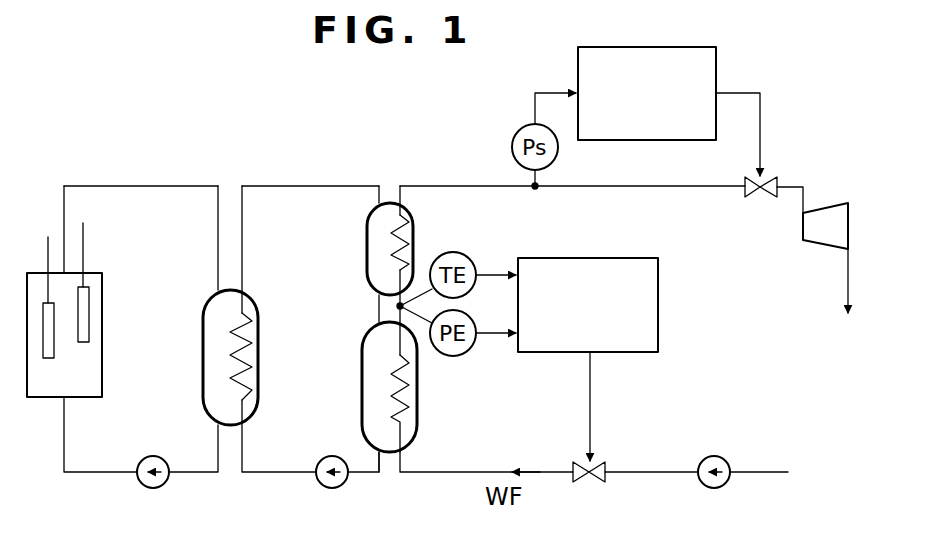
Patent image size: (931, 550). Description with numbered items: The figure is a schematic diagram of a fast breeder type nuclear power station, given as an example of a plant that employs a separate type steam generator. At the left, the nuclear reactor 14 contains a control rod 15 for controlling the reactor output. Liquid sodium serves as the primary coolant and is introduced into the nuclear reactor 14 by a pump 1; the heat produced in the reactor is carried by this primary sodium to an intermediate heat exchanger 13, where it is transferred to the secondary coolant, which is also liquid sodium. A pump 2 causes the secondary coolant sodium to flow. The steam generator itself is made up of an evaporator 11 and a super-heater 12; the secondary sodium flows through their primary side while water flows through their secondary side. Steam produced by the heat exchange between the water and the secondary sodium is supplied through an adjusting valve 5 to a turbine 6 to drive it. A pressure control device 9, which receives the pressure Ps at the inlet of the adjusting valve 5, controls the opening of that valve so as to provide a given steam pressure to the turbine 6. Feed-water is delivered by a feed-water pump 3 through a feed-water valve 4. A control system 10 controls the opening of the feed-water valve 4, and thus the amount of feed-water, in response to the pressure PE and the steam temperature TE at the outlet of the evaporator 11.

The pump 1 is at (150, 488).
The pump 2 is at (331, 488).
The feed-water pump 3 is at (718, 488).
The feed-water valve 4 is at (596, 482).
The adjusting valve 5 is at (758, 197).
The turbine 6 is at (831, 218).
The pressure control device 9 is at (680, 47).
The control system 10 is at (658, 290).
The evaporator 11 is at (362, 413).
The super-heater 12 is at (367, 247).
The intermediate heat exchanger 13 is at (258, 322).
The nuclear reactor 14 is at (102, 345).
The control rod 15 is at (83, 343).